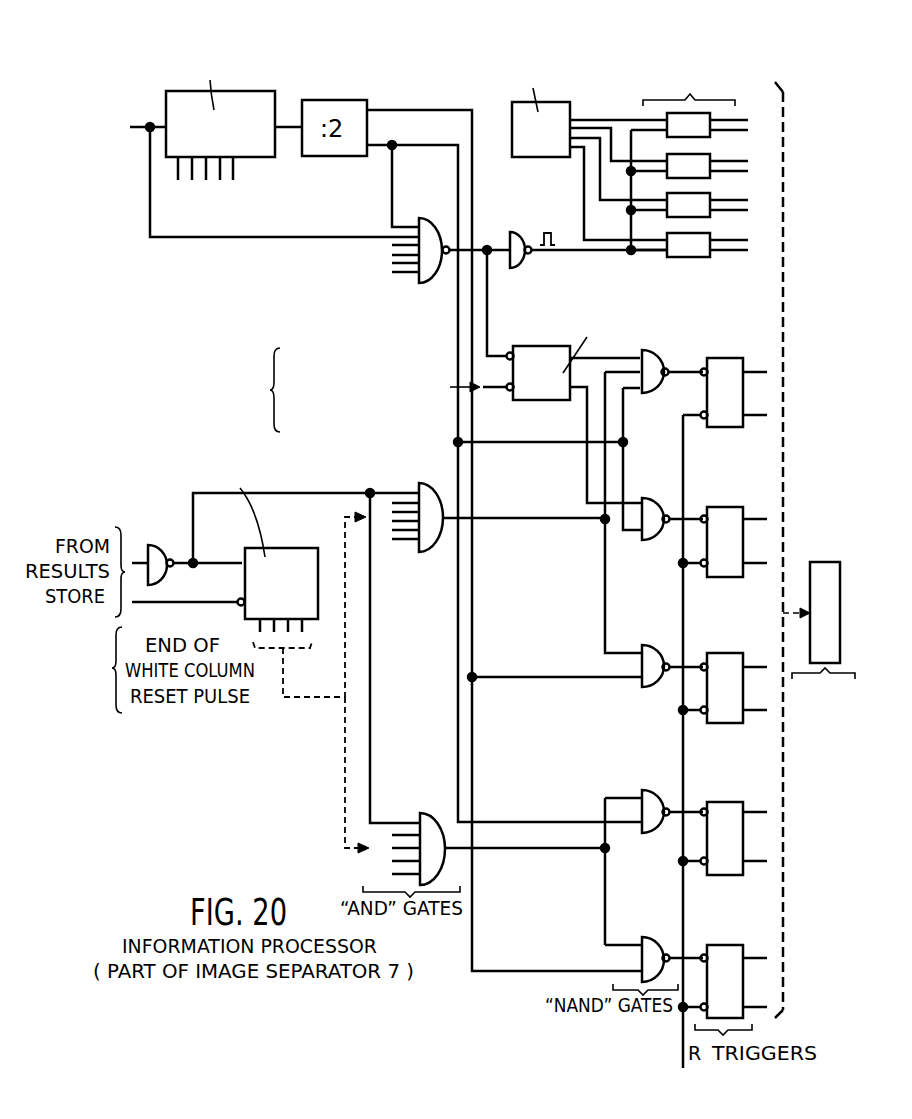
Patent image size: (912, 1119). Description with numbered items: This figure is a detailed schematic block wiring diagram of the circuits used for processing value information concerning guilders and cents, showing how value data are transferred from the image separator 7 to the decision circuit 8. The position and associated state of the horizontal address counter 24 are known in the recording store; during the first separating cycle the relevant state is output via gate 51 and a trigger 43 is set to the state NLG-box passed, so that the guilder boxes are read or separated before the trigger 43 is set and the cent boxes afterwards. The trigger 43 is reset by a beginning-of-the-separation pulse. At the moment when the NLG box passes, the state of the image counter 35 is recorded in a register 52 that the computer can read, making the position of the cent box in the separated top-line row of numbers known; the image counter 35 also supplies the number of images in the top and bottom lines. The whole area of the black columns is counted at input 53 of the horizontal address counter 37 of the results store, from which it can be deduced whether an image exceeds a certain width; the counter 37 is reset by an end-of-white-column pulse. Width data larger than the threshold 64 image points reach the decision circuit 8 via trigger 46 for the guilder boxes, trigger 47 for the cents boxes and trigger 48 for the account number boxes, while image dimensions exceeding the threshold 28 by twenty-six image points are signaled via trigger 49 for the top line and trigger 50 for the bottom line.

The horizontal address counter 24 is at (250, 143).
The horizontal address counter of the results store 37 is at (283, 555).
The image counter 35 is at (533, 148).
The register 52 is at (673, 276).
The gate 51 is at (428, 272).
The trigger 43 is at (556, 358).
The trigger 47 is at (725, 378).
The trigger 46 is at (724, 525).
The trigger 48 is at (725, 672).
The trigger 49 is at (721, 815).
The trigger 50 is at (720, 960).
The input 53 is at (147, 560).
The image points width threshold 64 is at (403, 483).
The image points dimension threshold 28 is at (402, 806).
The decision circuit 8 is at (821, 573).
The image separator 7 is at (259, 376).